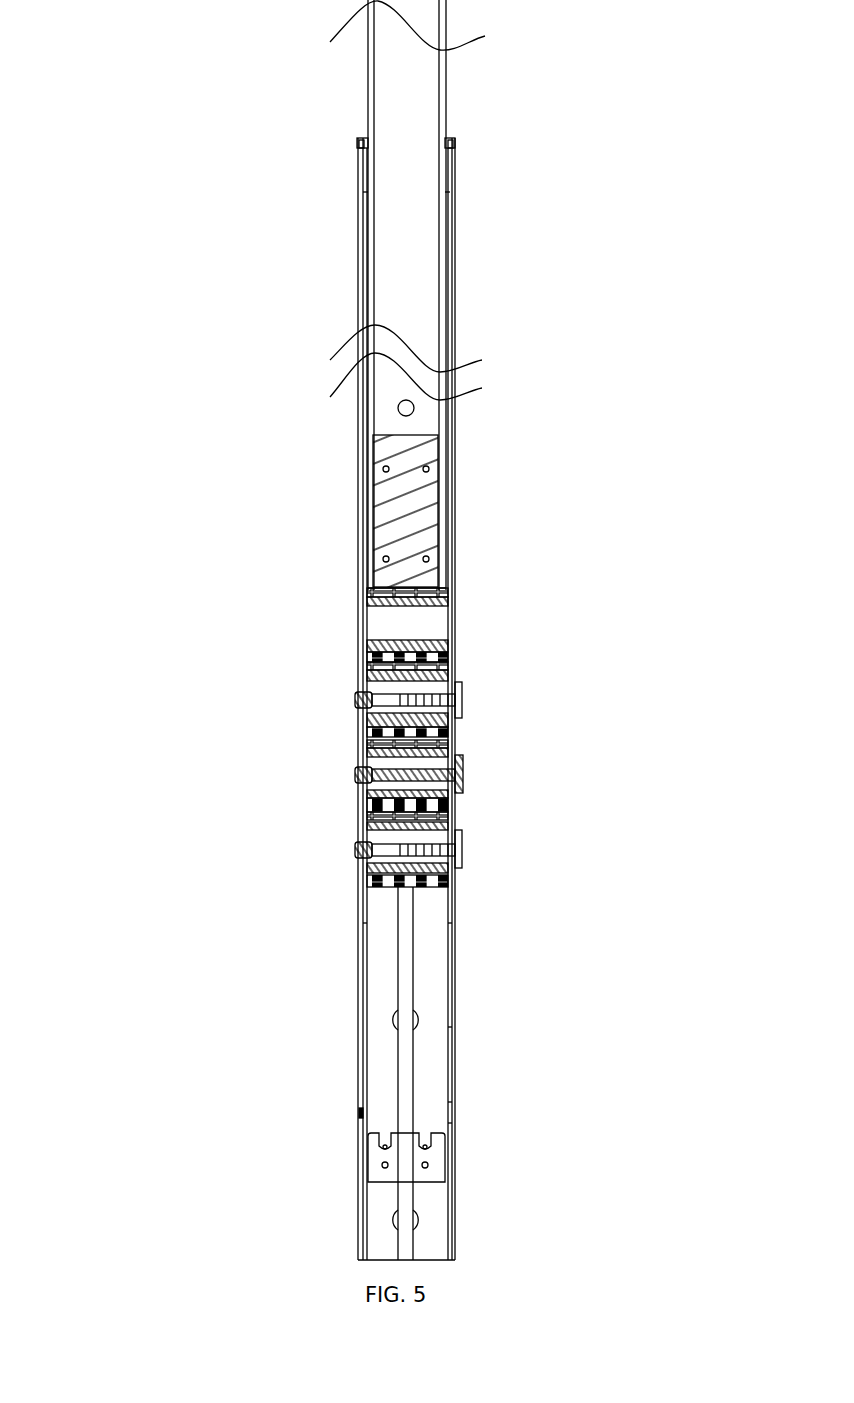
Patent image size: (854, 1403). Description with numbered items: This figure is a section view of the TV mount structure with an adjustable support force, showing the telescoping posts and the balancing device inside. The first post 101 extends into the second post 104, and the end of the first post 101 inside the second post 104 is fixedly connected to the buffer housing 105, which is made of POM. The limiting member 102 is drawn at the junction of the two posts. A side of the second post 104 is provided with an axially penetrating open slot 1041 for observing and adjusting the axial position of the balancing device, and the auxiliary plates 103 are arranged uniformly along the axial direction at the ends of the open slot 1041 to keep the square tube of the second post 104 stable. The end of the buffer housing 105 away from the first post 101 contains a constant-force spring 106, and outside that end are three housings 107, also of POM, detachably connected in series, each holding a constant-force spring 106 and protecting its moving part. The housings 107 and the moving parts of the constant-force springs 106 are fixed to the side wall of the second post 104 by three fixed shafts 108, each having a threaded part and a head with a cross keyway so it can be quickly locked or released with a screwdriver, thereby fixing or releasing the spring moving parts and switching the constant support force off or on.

The first post 101 is at (558, 123).
The limiting member 102 is at (360, 148).
The auxiliary plate 103 is at (405, 1150).
The second post 104 is at (615, 1077).
The open slot 1041 is at (405, 982).
The buffer housing 105 is at (565, 512).
The constant-force spring 106 is at (403, 673).
The housing 107 is at (385, 755).
The fixed shaft 108 is at (610, 695).